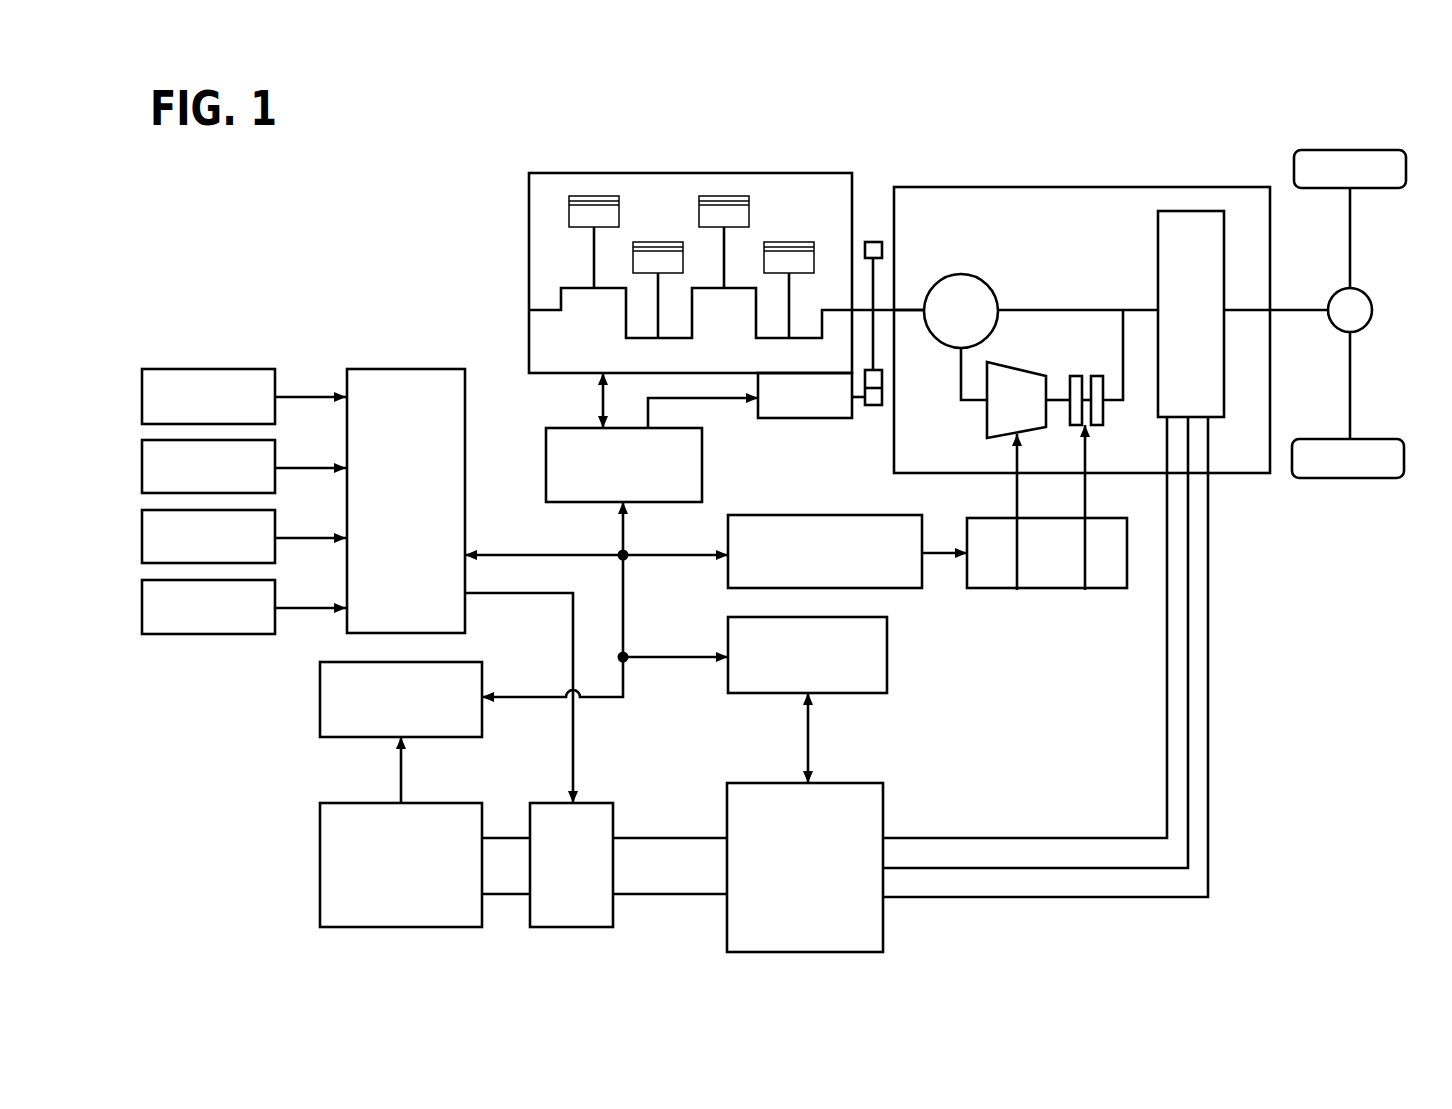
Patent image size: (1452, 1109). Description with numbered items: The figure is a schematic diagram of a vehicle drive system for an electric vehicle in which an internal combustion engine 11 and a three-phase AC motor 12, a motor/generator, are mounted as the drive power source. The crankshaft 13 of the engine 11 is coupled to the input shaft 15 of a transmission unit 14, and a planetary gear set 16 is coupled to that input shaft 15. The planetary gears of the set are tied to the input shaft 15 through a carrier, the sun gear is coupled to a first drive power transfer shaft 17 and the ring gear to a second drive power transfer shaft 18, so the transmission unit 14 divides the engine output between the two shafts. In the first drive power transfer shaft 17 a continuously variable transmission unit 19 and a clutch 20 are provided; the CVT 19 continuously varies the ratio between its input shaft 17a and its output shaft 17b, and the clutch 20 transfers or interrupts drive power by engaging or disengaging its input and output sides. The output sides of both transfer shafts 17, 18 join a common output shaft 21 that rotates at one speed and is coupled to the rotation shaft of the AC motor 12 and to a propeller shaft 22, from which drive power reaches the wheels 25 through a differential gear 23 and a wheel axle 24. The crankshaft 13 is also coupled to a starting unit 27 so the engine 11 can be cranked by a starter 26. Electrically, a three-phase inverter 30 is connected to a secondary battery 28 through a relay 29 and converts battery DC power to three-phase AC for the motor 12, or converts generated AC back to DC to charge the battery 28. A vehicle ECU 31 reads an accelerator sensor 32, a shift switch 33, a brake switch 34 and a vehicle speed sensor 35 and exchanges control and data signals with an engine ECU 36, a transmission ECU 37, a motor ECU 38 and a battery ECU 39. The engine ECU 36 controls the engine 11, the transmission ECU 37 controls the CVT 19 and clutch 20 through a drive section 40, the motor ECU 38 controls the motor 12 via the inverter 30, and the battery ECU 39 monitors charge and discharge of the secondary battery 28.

The internal combustion engine 11 is at (653, 173).
The three-phase AC motor (motor/generator) 12 is at (1192, 208).
The crankshaft 13 is at (831, 306).
The transmission unit (power regulation mechanism) 14 is at (957, 243).
The input shaft 15 is at (913, 306).
The planetary gear set (drive power divider unit) 16 is at (987, 273).
The first drive power transfer shaft 17 is at (958, 384).
The input shaft of the CVT 17a is at (970, 406).
The output shaft of the CVT 17b is at (1058, 398).
The second drive power transfer shaft 18 is at (1063, 306).
The continuously variable transmission unit (CVT) 19 is at (993, 441).
The clutch (switching unit) 20 is at (1098, 433).
The common output shaft 21 is at (1138, 306).
The propeller shaft (drive axle) 22 is at (1251, 306).
The differential gear 23 is at (1370, 292).
The wheel axle 24 is at (1354, 238).
The wheels 25 is at (1367, 150).
The starter 26 is at (798, 420).
The starting unit 27 is at (878, 238).
The secondary battery 28 is at (318, 861).
The relay 29 is at (599, 801).
The three-phase inverter 30 is at (857, 782).
The vehicle ECU 31 is at (408, 368).
The accelerator sensor 32 is at (262, 367).
The shift switch 33 is at (262, 437).
The brake switch 34 is at (262, 507).
The vehicle speed sensor 35 is at (262, 577).
The engine ECU 36 is at (566, 427).
The transmission ECU 37 is at (922, 567).
The motor ECU 38 is at (887, 674).
The battery ECU 39 is at (318, 695).
The drive section 40 is at (1043, 590).